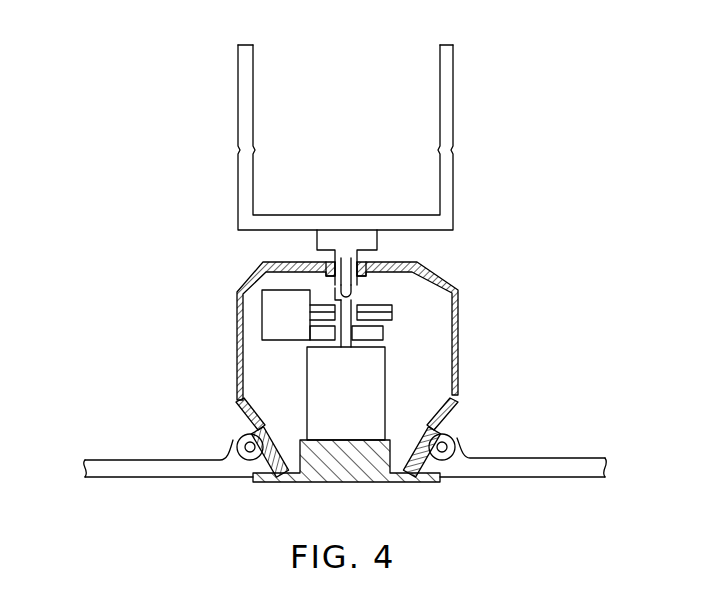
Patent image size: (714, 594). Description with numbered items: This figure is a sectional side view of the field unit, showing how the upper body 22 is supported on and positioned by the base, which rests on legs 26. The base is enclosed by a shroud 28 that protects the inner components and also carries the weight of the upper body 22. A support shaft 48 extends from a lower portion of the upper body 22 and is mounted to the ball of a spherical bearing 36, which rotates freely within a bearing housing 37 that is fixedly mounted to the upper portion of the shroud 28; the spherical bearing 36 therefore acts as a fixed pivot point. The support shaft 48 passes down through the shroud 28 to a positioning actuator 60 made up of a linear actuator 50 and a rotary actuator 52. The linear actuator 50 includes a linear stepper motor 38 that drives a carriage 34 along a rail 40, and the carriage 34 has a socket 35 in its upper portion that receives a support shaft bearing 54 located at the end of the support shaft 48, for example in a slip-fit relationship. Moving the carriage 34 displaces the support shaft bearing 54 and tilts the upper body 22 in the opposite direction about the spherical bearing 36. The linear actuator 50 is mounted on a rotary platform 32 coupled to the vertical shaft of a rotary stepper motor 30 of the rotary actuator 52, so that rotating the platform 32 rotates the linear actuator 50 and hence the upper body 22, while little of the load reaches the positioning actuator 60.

The upper body 22 is at (455, 90).
The legs 26 is at (543, 458).
The shroud 28 is at (460, 327).
The rotary stepper motor 30 is at (303, 413).
The rotary platform 32 is at (393, 323).
The carriage 34 is at (357, 293).
The socket 35 is at (345, 330).
The spherical bearing 36 is at (328, 263).
The bearing housing 37 is at (372, 263).
The linear stepper motor 38 is at (262, 318).
The rail 40 is at (393, 308).
The support shaft 48 is at (350, 245).
The linear actuator 50 is at (227, 290).
The rotary actuator 52 is at (290, 362).
The support shaft bearing 54 is at (337, 292).
The positioning actuator 60 is at (167, 258).